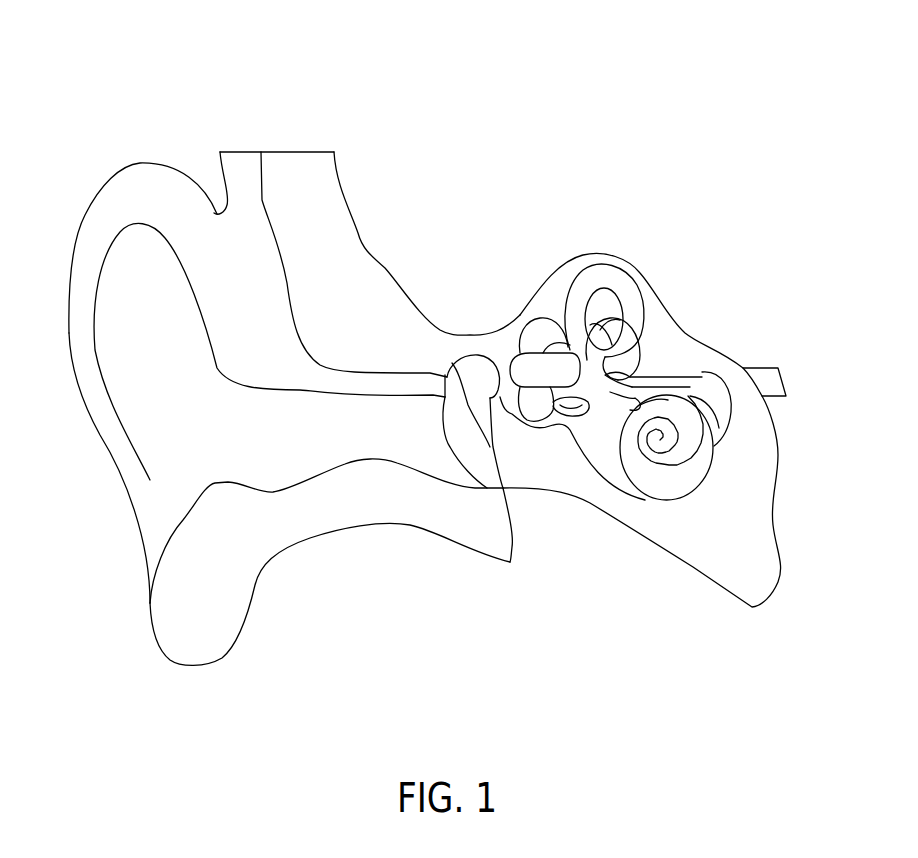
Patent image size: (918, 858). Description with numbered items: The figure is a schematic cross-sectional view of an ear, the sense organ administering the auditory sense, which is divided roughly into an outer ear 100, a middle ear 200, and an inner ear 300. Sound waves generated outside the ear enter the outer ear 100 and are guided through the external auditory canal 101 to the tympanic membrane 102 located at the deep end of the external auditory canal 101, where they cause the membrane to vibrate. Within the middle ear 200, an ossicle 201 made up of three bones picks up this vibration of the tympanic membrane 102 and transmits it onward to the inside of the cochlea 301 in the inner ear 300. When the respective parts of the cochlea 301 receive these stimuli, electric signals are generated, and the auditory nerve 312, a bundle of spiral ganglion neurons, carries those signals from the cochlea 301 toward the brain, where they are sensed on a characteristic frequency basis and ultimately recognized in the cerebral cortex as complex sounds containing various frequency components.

The outer ear 100 is at (462, 80).
The external auditory canal 101 is at (293, 458).
The tympanic membrane 102 is at (468, 452).
The middle ear 200 is at (587, 82).
The ossicle 201 is at (552, 390).
The inner ear 300 is at (733, 82).
The cochlea 301 is at (645, 488).
The auditory nerve 312 is at (765, 365).